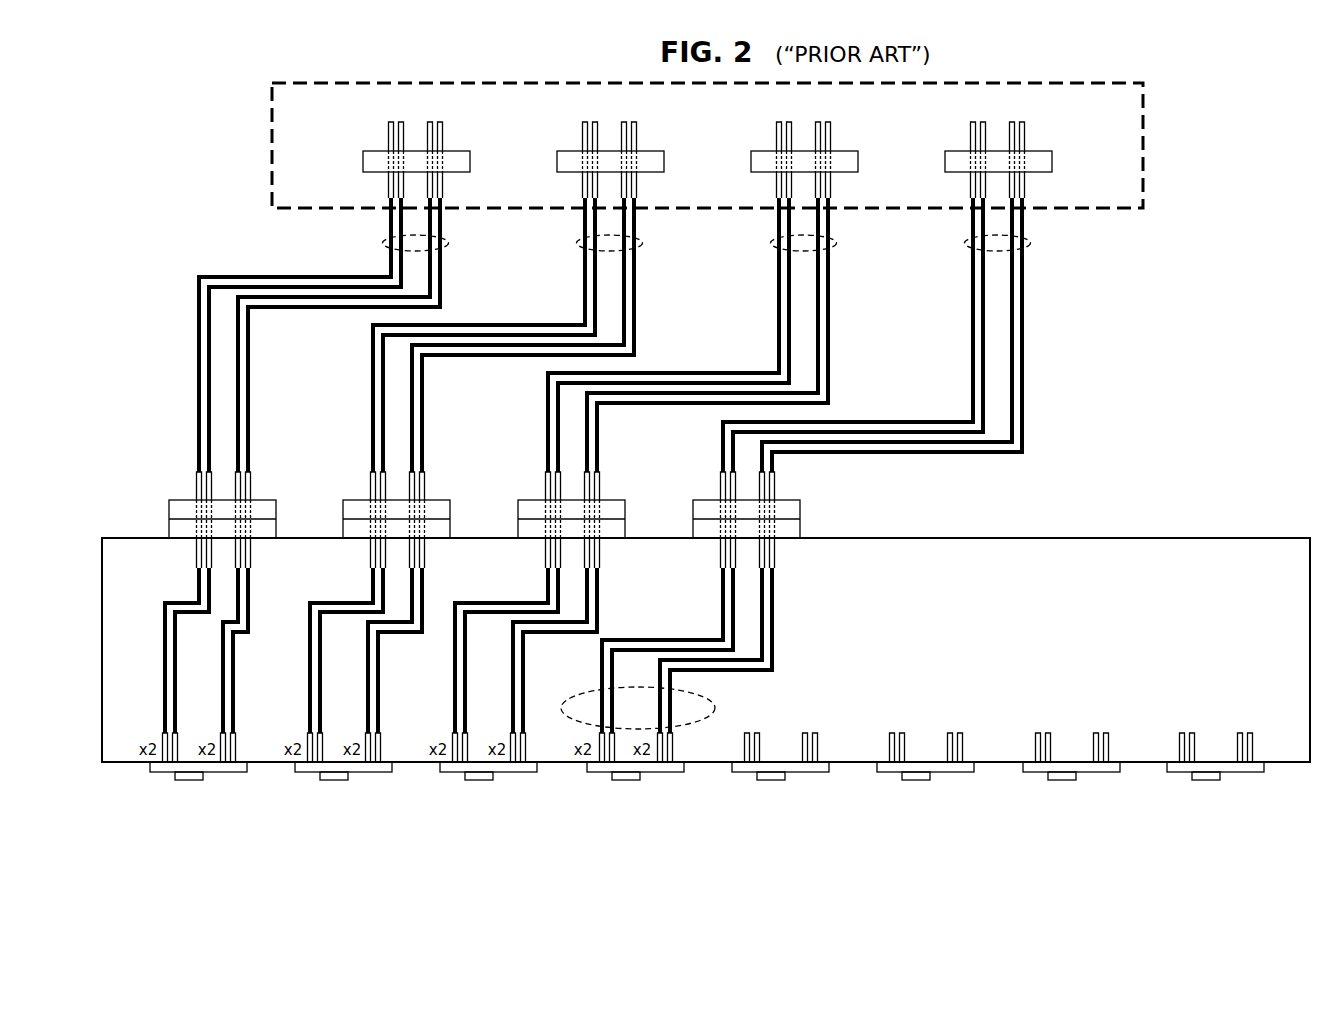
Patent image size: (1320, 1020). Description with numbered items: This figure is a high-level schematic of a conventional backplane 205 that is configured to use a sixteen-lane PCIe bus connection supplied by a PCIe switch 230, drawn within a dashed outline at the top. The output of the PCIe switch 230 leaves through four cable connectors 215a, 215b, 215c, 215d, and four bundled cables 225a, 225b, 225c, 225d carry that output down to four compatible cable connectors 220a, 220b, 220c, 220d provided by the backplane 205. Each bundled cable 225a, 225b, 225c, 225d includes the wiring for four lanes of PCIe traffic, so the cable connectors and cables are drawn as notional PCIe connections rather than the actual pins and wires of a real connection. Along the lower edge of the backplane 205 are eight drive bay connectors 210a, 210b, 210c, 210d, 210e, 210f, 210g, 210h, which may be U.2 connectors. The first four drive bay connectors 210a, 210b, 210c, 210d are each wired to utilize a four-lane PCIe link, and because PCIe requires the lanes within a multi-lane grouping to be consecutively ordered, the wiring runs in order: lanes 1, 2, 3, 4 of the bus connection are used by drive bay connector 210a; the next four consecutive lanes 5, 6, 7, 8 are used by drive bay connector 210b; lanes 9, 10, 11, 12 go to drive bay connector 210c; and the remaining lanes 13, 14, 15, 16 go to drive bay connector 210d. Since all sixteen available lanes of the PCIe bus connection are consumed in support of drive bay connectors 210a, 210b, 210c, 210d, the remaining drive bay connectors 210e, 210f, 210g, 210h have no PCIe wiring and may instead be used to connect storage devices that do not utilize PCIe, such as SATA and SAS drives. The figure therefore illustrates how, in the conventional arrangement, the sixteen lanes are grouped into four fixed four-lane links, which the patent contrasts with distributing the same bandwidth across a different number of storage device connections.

The backplane 205 is at (1042, 538).
The drive bay connector 210a is at (189, 781).
The drive bay connector 210b is at (334, 781).
The drive bay connector 210c is at (479, 781).
The drive bay connector 210d is at (626, 781).
The drive bay connector 210e is at (771, 781).
The drive bay connector 210f is at (916, 781).
The drive bay connector 210g is at (1062, 781).
The drive bay connector 210h is at (1207, 781).
The cable connector 215a is at (363, 159).
The cable connector 215b is at (557, 159).
The cable connector 215c is at (858, 160).
The cable connector 215d is at (1052, 160).
The cable connector 220a is at (169, 508).
The cable connector 220b is at (365, 500).
The cable connector 220c is at (540, 500).
The cable connector 220d is at (800, 510).
The bundled cable 225a is at (383, 243).
The bundled cable 225b is at (577, 243).
The bundled cable 225c is at (836, 241).
The bundled cable 225d is at (1030, 241).
The PCIe switch 230 is at (272, 133).
The lane 1 is at (271, 427).
The lane 2 is at (290, 417).
The lane 3 is at (321, 417).
The lane 4 is at (345, 427).
The lane 5 is at (441, 427).
The lane 6 is at (460, 417).
The lane 7 is at (490, 417).
The lane 8 is at (515, 427).
The lane 9 is at (610, 427).
The lane 10 is at (632, 417).
The lane 11 is at (661, 417).
The lane 12 is at (687, 427).
The lane 13 is at (776, 427).
The lane 14 is at (802, 417).
The lane 15 is at (828, 417).
The lane 16 is at (857, 427).